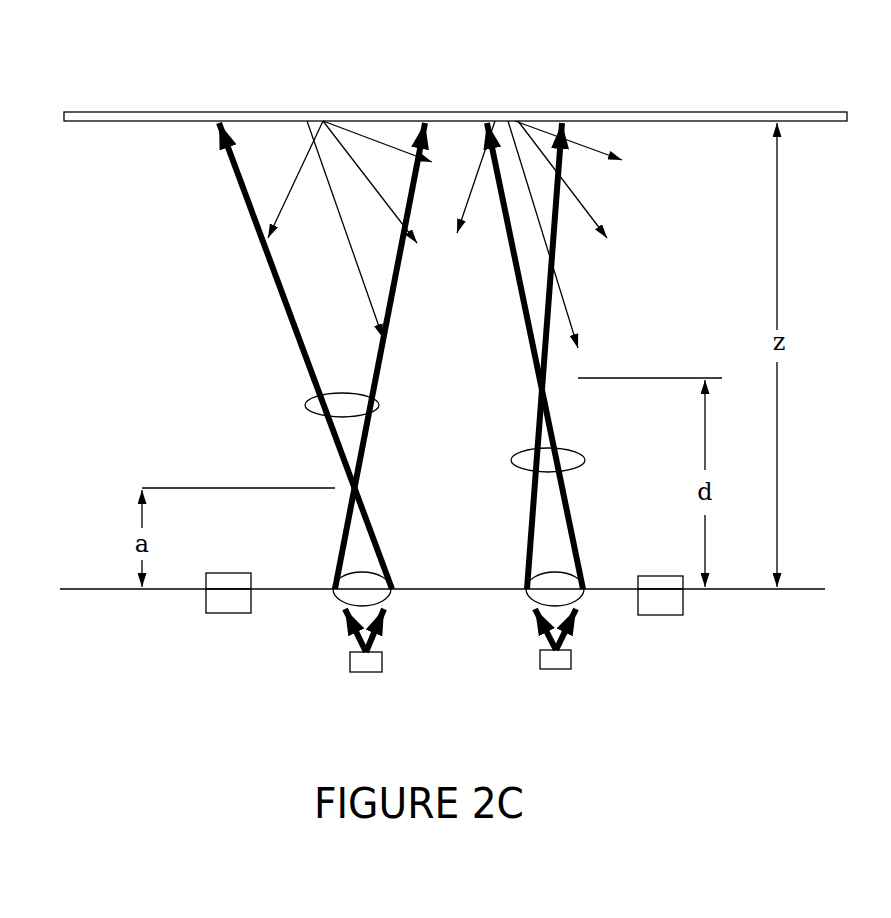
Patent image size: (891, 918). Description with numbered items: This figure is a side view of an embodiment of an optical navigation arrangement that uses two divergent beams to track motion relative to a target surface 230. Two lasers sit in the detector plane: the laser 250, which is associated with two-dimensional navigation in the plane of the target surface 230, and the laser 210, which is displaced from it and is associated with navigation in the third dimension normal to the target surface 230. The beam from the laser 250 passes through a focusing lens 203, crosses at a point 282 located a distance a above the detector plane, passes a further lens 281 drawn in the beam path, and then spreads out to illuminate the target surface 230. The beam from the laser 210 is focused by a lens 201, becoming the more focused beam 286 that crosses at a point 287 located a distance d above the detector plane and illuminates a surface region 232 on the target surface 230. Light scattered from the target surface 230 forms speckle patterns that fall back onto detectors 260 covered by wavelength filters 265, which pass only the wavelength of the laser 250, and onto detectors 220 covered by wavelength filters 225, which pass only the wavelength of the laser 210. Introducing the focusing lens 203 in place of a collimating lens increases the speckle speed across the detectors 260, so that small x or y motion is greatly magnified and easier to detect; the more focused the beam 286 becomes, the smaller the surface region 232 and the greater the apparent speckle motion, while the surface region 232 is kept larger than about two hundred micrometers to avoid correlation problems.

The target surface 230 is at (828, 114).
The surface region 232 is at (516, 106).
The lens 281 is at (305, 402).
The point 282 is at (360, 488).
The focusing lens 203 is at (366, 580).
The lens 201 is at (550, 585).
The focused beam 286 is at (585, 460).
The point 287 is at (540, 398).
The wavelength filters 265 is at (228, 582).
The detectors 260 is at (228, 603).
The wavelength filters 225 is at (658, 585).
The detectors 220 is at (658, 605).
The laser 250 is at (370, 658).
The laser 210 is at (557, 657).